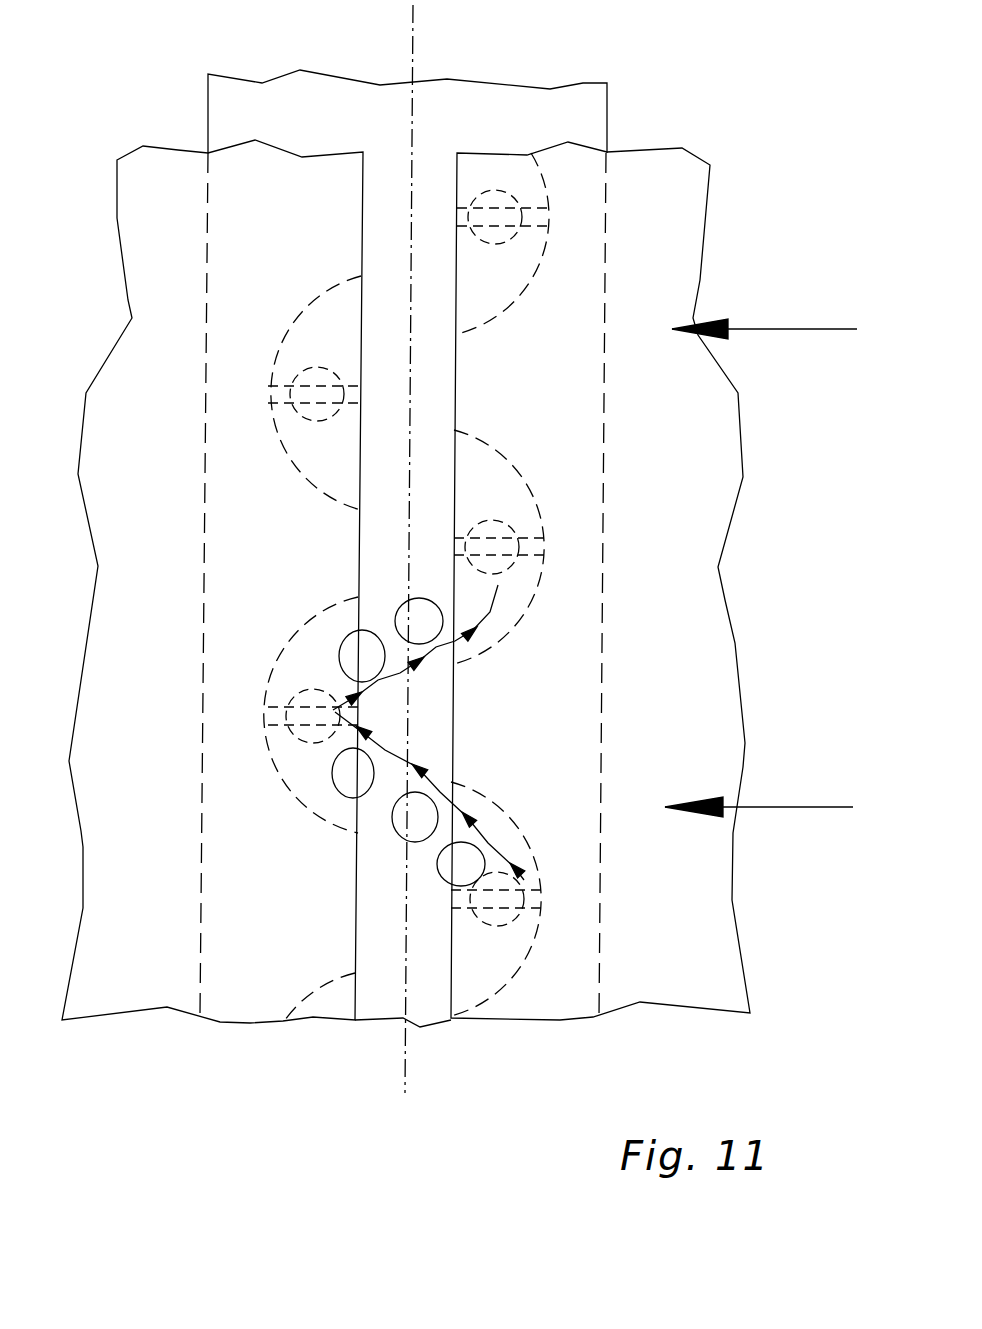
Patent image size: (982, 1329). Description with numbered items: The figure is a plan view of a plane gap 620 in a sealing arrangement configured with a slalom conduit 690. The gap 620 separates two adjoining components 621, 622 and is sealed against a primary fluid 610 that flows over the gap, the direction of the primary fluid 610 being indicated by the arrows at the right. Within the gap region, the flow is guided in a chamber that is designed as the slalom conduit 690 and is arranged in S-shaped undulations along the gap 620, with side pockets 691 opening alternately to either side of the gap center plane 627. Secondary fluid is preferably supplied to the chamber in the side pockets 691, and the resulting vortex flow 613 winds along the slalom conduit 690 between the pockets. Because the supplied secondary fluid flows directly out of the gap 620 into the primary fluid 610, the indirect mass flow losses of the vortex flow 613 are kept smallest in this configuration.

The primary fluid 610 is at (767, 329).
The vortex flow 613 is at (335, 795).
The gap 620 is at (353, 1100).
The left body section 621 is at (125, 985).
The right body section 622 is at (687, 982).
The gap center plane 627 is at (415, 53).
The slalom conduit 690 is at (473, 962).
The side pockets 691 is at (500, 823).